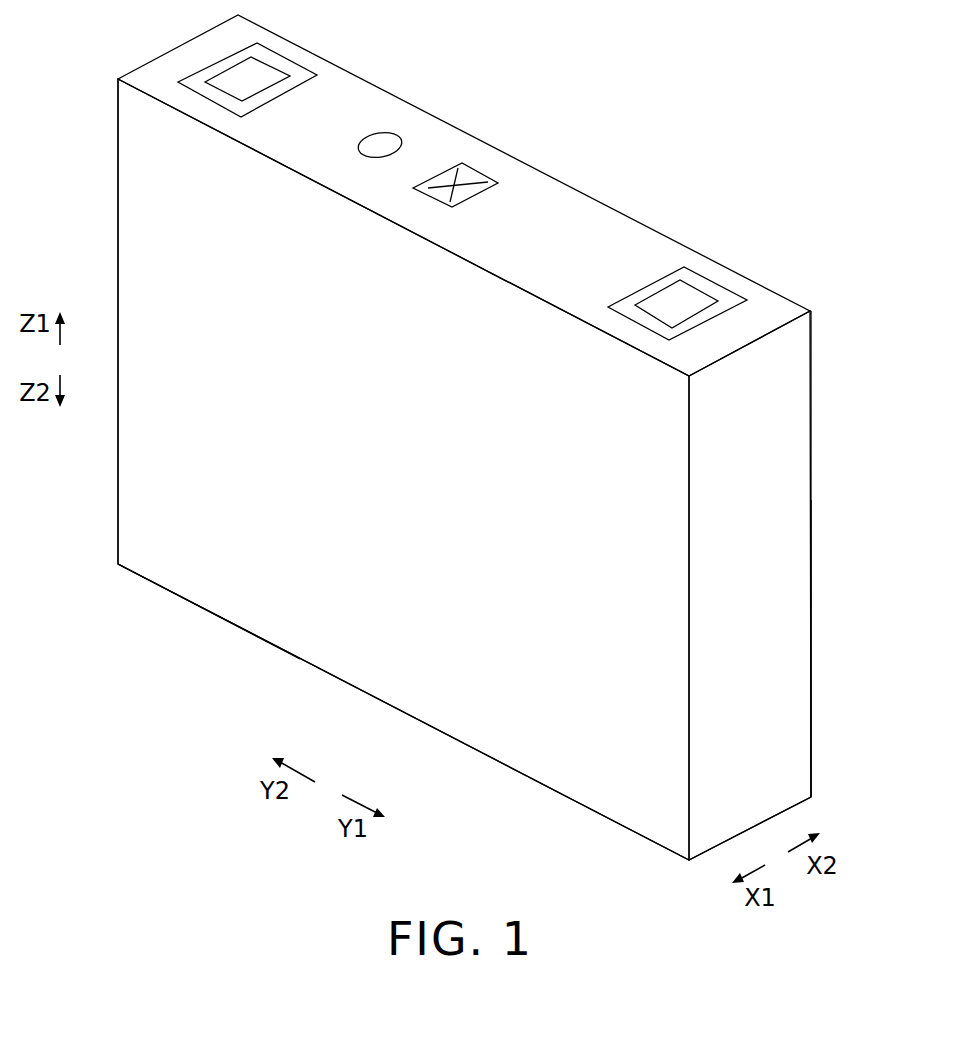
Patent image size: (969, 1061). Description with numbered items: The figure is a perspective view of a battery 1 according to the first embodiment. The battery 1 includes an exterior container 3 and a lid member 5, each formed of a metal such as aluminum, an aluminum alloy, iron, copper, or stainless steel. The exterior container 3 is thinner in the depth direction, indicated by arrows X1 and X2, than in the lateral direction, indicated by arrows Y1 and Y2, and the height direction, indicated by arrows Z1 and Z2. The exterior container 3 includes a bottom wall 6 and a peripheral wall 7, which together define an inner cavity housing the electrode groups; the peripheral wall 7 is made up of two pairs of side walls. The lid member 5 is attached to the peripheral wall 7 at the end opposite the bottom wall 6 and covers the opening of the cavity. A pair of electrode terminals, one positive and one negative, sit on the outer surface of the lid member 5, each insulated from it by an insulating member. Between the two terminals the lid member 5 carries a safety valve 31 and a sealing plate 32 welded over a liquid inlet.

The battery 1 is at (791, 78).
The exterior container 3 is at (846, 406).
The lid member 5 is at (563, 213).
The bottom wall 6 is at (573, 807).
The peripheral wall 7 is at (514, 742).
The safety valve 31 is at (472, 178).
The sealing plate 32 is at (382, 143).